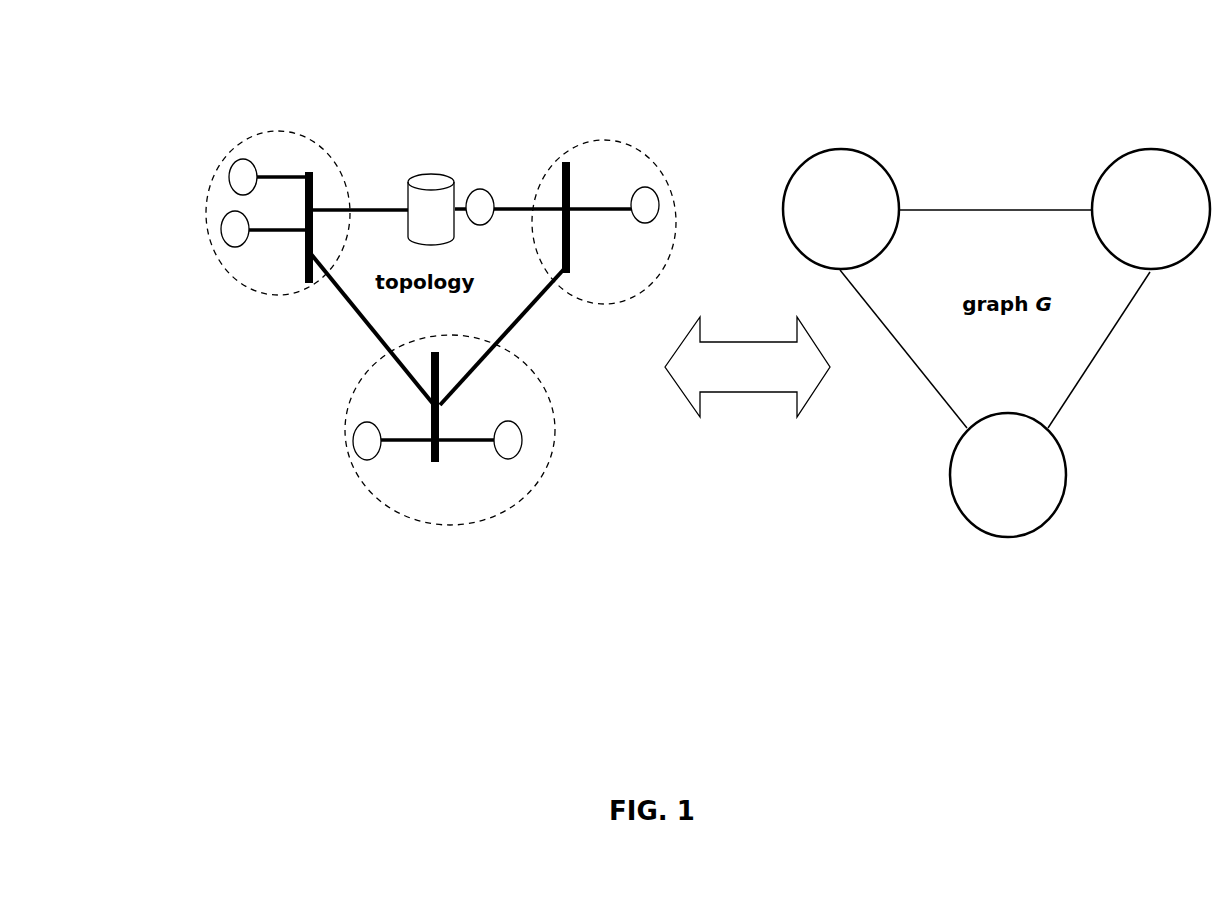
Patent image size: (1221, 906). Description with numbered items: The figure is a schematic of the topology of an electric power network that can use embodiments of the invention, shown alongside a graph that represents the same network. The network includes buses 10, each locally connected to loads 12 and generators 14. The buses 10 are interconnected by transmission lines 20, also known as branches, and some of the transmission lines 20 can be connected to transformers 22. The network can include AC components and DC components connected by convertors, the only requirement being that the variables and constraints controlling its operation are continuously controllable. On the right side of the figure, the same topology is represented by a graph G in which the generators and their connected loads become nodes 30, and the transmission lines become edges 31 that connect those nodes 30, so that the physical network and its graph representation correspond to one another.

The bus 10 is at (321, 178).
The load 12 is at (227, 182).
The generator 14 is at (235, 247).
The transmission line 20 is at (488, 190).
The transformer 22 is at (441, 172).
The node 30 is at (833, 147).
The edge 31 is at (1060, 208).